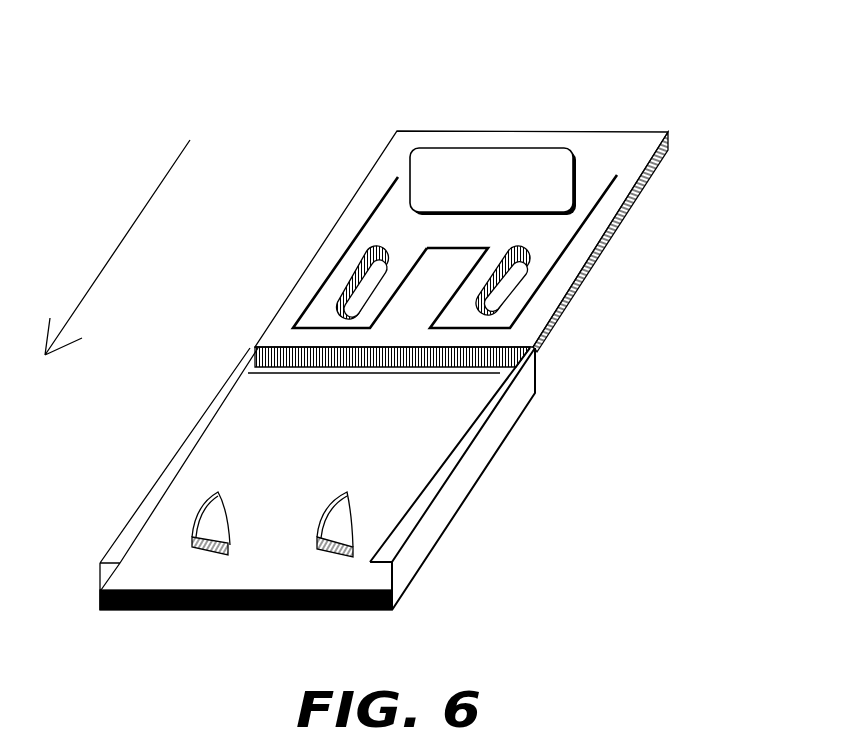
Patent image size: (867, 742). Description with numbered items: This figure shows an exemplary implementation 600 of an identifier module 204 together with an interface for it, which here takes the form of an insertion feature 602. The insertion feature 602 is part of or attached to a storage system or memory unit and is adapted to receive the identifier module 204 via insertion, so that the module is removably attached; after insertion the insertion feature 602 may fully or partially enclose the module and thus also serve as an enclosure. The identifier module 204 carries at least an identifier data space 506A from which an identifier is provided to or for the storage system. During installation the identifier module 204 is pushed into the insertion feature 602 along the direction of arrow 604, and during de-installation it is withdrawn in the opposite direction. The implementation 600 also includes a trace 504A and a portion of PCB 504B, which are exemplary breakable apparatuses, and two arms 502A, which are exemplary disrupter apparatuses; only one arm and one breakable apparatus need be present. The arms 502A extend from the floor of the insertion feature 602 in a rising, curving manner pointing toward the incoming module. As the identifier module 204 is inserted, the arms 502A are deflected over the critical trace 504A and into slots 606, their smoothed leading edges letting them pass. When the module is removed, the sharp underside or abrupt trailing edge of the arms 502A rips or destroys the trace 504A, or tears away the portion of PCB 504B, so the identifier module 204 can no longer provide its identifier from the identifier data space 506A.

The implementation 600 is at (195, 66).
The arrow 604 is at (143, 207).
The identifier module 204 is at (633, 142).
The trace 504A is at (512, 328).
The portion of PCB 504B is at (340, 344).
The slots 606 is at (372, 283).
The identifier data space 506A is at (420, 168).
The insertion feature 602 is at (433, 517).
The arms 502A is at (218, 518).